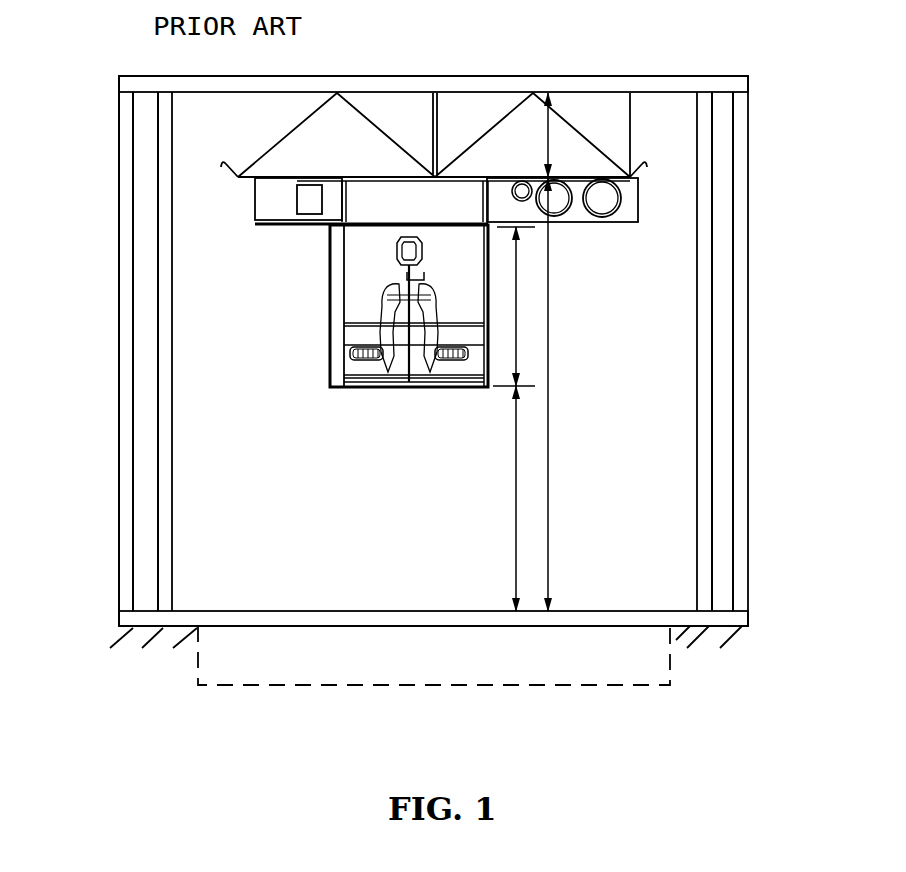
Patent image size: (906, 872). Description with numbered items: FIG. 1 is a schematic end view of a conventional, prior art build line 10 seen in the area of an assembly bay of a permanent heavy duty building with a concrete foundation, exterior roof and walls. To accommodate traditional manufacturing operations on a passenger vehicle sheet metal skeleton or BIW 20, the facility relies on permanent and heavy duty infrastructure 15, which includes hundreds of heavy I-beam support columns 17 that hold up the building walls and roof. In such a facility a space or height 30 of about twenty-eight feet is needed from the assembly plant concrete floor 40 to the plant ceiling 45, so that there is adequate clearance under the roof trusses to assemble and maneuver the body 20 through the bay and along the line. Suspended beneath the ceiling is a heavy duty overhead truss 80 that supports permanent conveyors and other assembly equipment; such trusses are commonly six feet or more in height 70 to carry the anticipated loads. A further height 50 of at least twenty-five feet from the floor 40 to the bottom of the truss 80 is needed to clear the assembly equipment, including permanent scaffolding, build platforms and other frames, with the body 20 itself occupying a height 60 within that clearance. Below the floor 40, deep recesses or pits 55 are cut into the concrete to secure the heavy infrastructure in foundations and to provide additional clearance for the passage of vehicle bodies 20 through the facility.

The prior art motion simulator system 10 is at (98, 190).
The infrastructure 15 is at (231, 391).
The I-beam support column 17 is at (119, 462).
The BIW 20 is at (386, 363).
The height 30 is at (548, 442).
The concrete floor 40 is at (602, 611).
The plant ceiling 45 is at (485, 76).
The height 50 is at (516, 520).
The pit 55 is at (433, 684).
The cabin height 60 is at (516, 302).
The truss height 70 is at (551, 136).
The overhead truss 80 is at (380, 131).